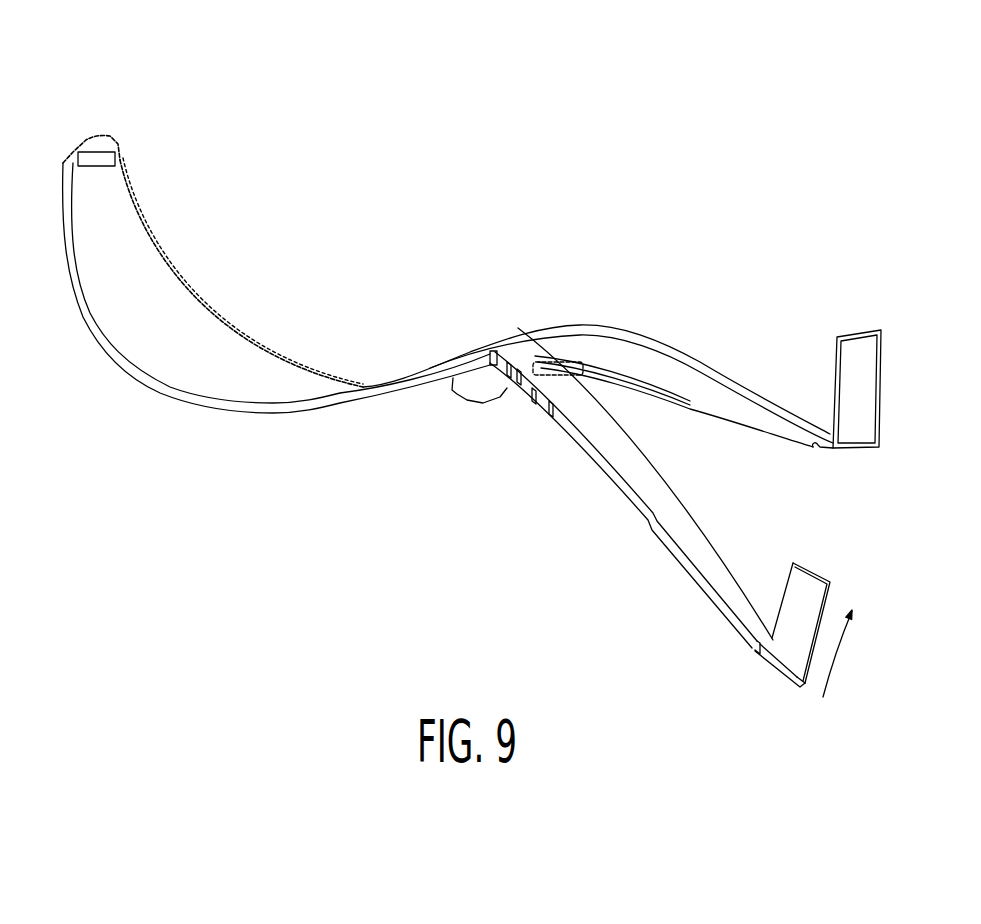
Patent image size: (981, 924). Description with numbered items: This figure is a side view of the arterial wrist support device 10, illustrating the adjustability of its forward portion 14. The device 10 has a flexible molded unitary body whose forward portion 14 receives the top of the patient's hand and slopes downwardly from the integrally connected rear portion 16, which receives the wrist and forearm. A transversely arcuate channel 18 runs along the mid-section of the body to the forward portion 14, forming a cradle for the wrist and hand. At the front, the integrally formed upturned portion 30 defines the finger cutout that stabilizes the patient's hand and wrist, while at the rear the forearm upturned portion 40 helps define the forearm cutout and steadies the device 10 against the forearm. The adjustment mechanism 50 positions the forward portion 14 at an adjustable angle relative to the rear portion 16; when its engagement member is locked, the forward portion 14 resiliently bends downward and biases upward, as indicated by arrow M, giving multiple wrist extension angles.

The device 10 is at (628, 140).
The forward portion 14 is at (814, 566).
The rear portion 16 is at (116, 140).
The transversely arcuate channel 18 is at (455, 354).
The upturned portion 30 is at (794, 598).
The forearm upturned portion 40 is at (95, 180).
The adjustment mechanism 50 is at (514, 408).
The direction of motion M is at (844, 637).